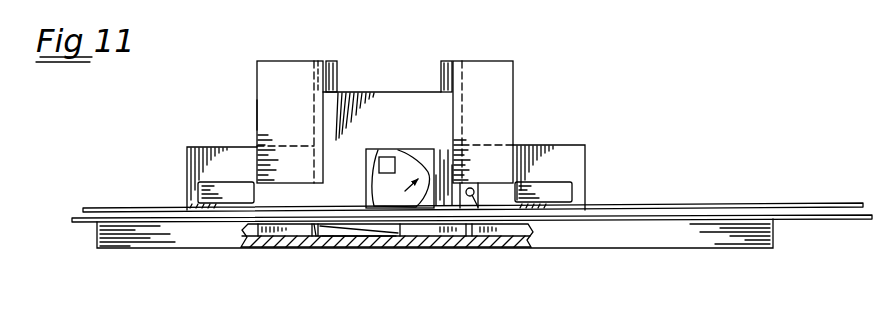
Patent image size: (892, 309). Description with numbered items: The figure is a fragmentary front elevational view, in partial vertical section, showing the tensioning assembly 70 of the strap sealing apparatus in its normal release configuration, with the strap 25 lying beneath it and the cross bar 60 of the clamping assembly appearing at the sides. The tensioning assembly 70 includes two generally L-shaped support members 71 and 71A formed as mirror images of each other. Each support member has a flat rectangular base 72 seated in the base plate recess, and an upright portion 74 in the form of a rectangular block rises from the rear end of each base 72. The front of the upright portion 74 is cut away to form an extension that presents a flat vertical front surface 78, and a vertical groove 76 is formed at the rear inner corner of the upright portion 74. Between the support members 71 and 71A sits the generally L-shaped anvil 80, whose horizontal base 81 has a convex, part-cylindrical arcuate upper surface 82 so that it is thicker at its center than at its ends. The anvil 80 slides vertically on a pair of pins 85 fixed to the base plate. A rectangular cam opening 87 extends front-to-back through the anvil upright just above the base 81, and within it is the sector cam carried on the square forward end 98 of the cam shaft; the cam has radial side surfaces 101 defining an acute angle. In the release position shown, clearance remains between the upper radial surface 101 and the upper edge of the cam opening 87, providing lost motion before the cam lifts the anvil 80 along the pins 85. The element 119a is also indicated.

The strap 25 is at (825, 220).
The cross bar 60 is at (565, 145).
The tensioning assembly 70 is at (532, 38).
The support member 71 is at (267, 122).
The support member 71A is at (516, 75).
The base 72 is at (490, 240).
The upright portion 74 is at (257, 116).
The vertical groove 76 is at (319, 60).
The front surface 78 is at (308, 110).
The anvil 80 is at (403, 91).
The base 81 is at (365, 237).
The arcuate upper surface 82 is at (318, 226).
The pins 85 is at (337, 75).
The cam opening 87 is at (390, 154).
The forward end of cam shaft 98 is at (393, 122).
The radial side surfaces 101 is at (410, 151).
The pivot pin 119a is at (473, 189).